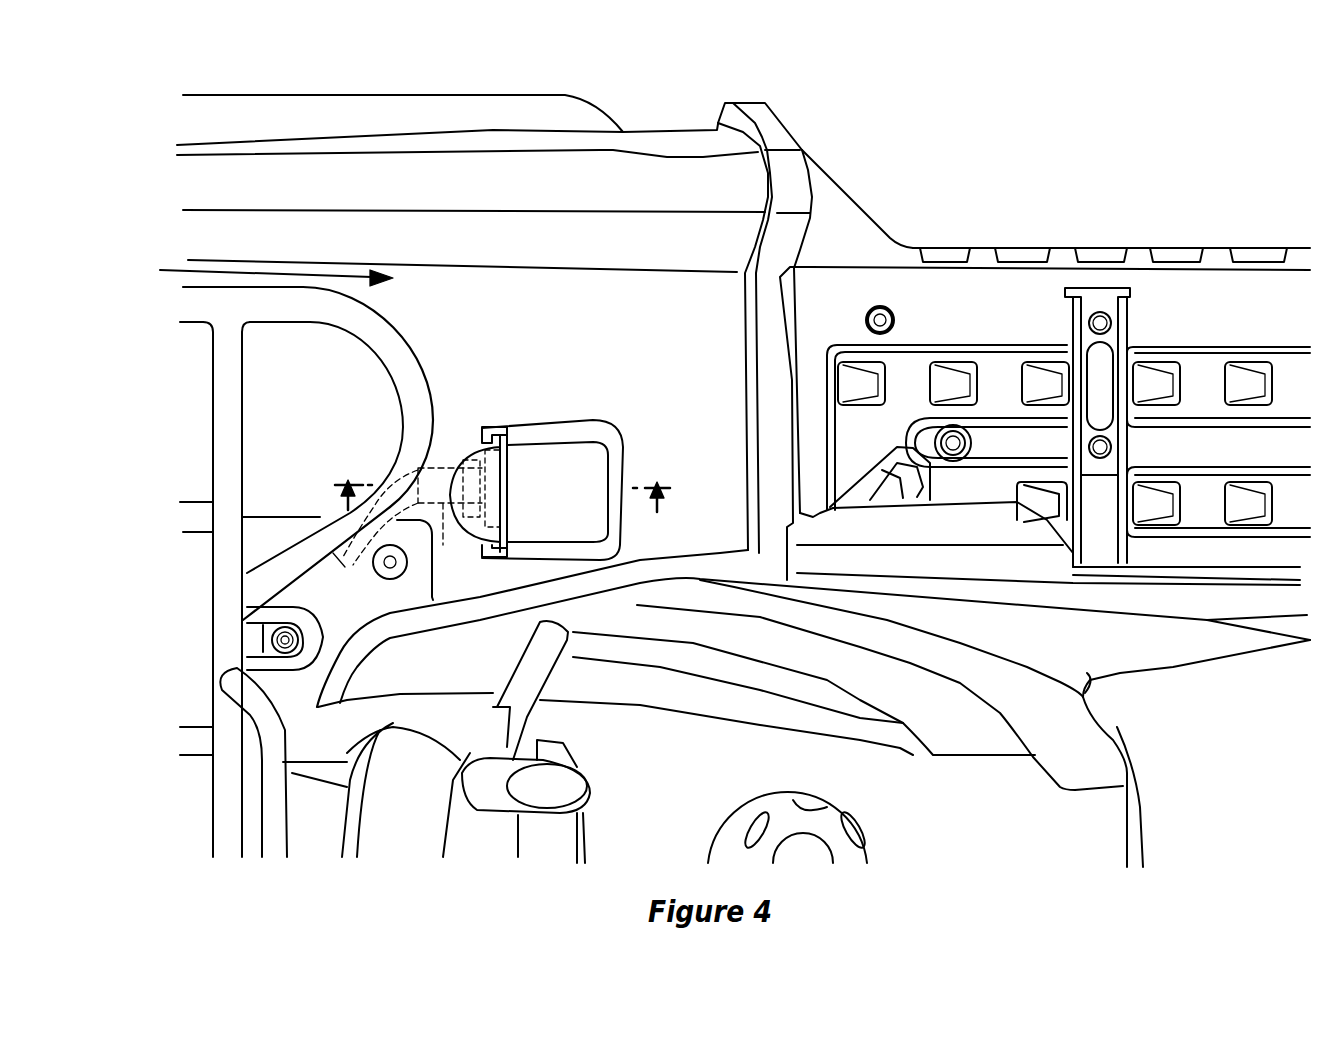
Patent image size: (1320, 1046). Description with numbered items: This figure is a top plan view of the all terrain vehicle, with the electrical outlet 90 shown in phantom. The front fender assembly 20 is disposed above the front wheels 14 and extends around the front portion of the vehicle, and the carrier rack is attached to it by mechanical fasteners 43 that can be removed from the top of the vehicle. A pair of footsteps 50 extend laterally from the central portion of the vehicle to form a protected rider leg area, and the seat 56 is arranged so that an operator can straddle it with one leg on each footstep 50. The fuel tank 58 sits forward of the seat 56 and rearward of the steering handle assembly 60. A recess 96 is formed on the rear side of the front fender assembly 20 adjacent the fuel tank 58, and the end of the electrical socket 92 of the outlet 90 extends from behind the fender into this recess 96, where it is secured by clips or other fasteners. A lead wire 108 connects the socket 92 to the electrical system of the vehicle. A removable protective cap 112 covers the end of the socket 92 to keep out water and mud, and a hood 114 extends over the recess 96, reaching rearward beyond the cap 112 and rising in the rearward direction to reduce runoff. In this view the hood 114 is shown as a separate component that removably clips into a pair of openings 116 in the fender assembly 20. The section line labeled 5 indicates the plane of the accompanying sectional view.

The front wheels 14 is at (498, 93).
The front fender assembly 20 is at (687, 128).
The mechanical fasteners 43 is at (390, 323).
The footsteps 50 is at (1189, 292).
The seat 56 is at (1178, 681).
The fuel tank 58 is at (940, 777).
The steering handle assembly 60 is at (540, 682).
The electrical outlet 90 is at (522, 496).
The electrical socket 92 is at (450, 517).
The recess 96 is at (600, 467).
The lead wire 108 is at (400, 487).
The protective cap 112 is at (500, 480).
The hood 114 is at (497, 530).
The openings 116 is at (500, 432).
The section line 5 is at (507, 490).